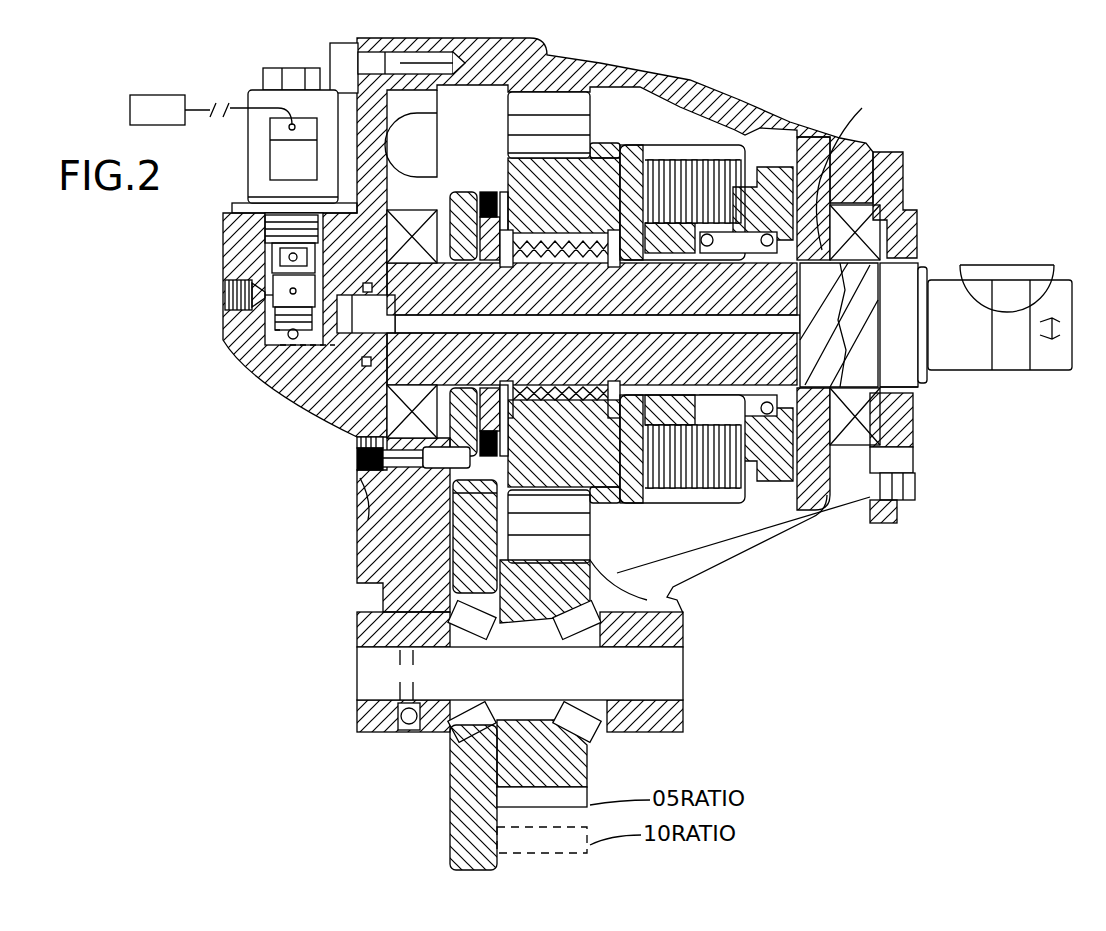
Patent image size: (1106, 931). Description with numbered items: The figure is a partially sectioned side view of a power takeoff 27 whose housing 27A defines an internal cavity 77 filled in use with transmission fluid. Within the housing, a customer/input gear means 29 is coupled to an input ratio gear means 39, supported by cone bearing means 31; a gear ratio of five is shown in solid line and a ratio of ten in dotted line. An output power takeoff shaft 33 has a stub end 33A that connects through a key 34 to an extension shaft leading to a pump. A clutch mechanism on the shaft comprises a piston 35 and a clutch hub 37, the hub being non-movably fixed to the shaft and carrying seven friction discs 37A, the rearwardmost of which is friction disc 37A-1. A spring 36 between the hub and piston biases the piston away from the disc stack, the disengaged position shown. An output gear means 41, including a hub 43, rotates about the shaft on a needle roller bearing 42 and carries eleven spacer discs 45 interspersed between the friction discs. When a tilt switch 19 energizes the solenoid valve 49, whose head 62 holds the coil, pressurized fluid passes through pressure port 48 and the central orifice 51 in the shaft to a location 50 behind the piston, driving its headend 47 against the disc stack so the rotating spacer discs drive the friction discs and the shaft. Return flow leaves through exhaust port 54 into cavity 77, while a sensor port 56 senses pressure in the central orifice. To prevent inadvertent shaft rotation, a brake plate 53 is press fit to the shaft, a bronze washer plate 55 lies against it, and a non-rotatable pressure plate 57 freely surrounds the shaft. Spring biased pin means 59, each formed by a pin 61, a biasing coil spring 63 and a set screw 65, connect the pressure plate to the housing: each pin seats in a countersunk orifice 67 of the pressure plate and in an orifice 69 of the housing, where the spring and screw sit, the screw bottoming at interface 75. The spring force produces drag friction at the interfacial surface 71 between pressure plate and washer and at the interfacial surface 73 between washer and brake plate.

The tilt switch 19 is at (170, 124).
The power takeoff 27 is at (940, 118).
The housing 27A is at (560, 60).
The customer/input gear means 29 is at (450, 810).
The cone bearing means 31 is at (458, 740).
The output power takeoff shaft 33 is at (905, 278).
The stub end 33A is at (980, 360).
The key 34 is at (1025, 275).
The piston 35 is at (848, 205).
The spring 36 is at (725, 262).
The clutch hub 37 is at (625, 160).
The friction discs 37A is at (724, 158).
The rearwardmost friction disc 37A-1 is at (740, 158).
The input ratio gear means 39 is at (592, 568).
The output gear means 41 is at (508, 123).
The needle roller bearing 42 is at (615, 266).
The hub 43 is at (515, 158).
The spacer discs 45 is at (740, 492).
The headend 47 is at (856, 167).
The pressure port 48 is at (275, 256).
The solenoid valve 49 is at (256, 90).
The location behind piston 50 is at (885, 176).
The central orifice 51 is at (570, 322).
The brake plate 53 is at (490, 192).
The exhaust port 54 is at (288, 336).
The washer plate 55 is at (505, 262).
The sensor port 56 is at (223, 294).
The pressure plate 57 is at (425, 264).
The spring biased pin means 59 is at (360, 478).
The pin 61 is at (480, 395).
The head 62 is at (308, 174).
The biasing coil spring 63 is at (357, 442).
The set screw 65 is at (357, 460).
The orifice 67 is at (622, 490).
The orifice 69 is at (420, 395).
The interfacial surface 71 is at (440, 220).
The interfacial surface 73 is at (462, 195).
The interface 75 is at (460, 458).
The internal cavity 77 is at (478, 112).